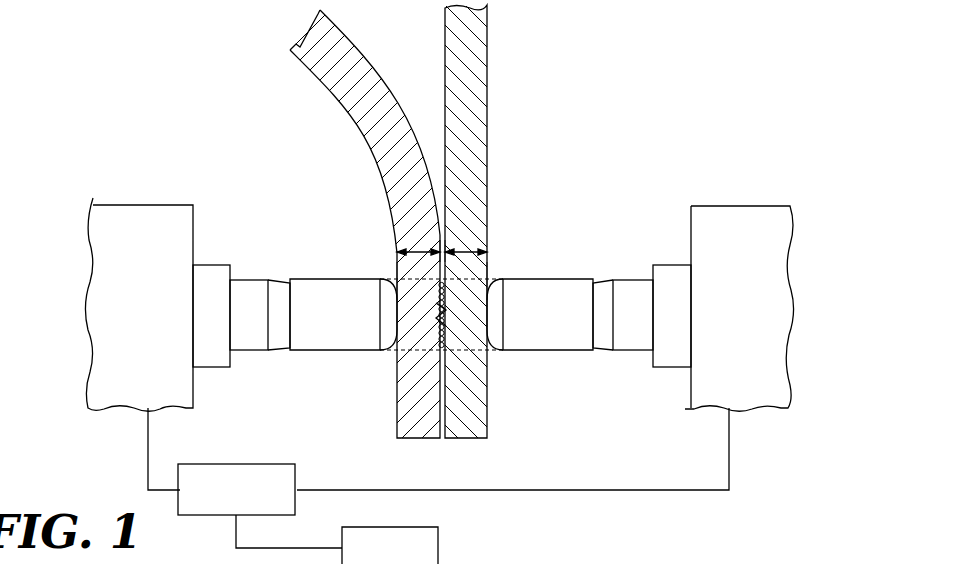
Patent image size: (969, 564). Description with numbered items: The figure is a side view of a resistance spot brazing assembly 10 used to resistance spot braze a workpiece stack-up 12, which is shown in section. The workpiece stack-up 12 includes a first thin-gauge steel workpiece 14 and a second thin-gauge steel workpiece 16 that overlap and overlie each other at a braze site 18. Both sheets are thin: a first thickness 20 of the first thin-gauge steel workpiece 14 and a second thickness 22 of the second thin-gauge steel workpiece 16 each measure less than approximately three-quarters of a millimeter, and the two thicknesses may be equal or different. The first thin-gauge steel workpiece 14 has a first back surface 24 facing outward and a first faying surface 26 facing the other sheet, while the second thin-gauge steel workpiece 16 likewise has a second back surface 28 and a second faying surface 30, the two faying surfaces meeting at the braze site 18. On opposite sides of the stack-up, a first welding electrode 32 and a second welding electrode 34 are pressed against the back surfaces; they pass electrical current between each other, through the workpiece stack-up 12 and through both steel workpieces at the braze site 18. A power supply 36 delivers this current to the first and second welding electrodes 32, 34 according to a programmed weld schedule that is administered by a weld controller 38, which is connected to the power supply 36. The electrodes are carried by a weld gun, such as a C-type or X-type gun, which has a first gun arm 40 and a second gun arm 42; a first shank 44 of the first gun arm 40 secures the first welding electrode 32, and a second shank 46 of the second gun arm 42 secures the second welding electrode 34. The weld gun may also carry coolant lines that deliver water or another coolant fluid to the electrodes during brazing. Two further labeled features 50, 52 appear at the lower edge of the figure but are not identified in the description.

The resistance spot brazing assembly 10 is at (240, 94).
The workpiece stack-up 12 is at (452, 452).
The first thin-gauge steel workpiece 14 is at (418, 412).
The second thin-gauge steel workpiece 16 is at (469, 414).
The braze site 18 is at (482, 258).
The first thickness 20 is at (418, 250).
The second thickness 22 is at (463, 251).
The first back surface 24 is at (397, 268).
The first faying surface 26 is at (441, 347).
The second back surface 28 is at (472, 271).
The second faying surface 30 is at (446, 318).
The first welding electrode 32 is at (312, 357).
The second welding electrode 34 is at (567, 360).
The power supply 36 is at (260, 506).
The weld controller 38 is at (390, 545).
The first gun arm 40 is at (162, 233).
The second gun arm 42 is at (746, 232).
The first shank 44 is at (247, 298).
The second shank 46 is at (637, 290).
The weld gun 50 is at (747, 556).
The actuator 52 is at (542, 559).